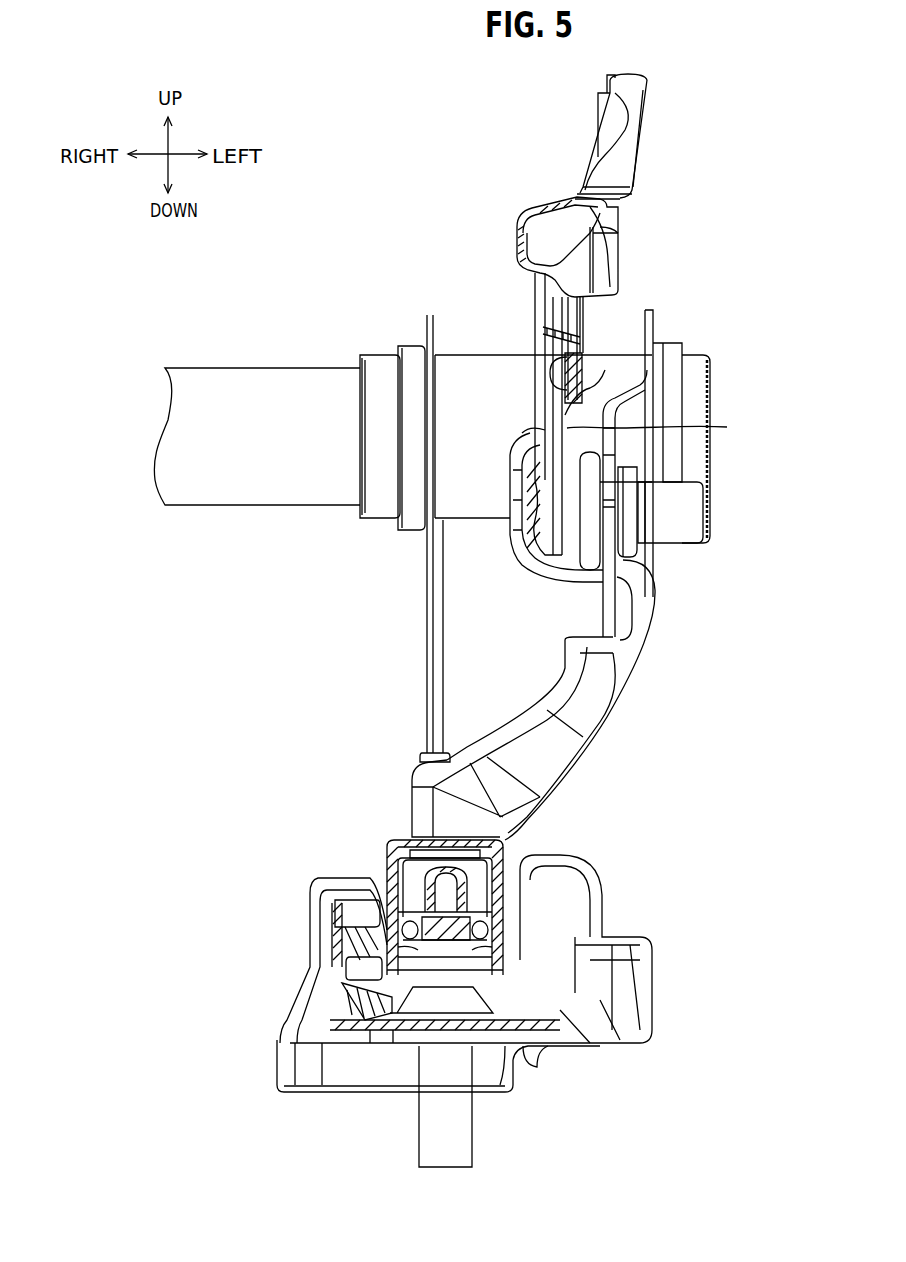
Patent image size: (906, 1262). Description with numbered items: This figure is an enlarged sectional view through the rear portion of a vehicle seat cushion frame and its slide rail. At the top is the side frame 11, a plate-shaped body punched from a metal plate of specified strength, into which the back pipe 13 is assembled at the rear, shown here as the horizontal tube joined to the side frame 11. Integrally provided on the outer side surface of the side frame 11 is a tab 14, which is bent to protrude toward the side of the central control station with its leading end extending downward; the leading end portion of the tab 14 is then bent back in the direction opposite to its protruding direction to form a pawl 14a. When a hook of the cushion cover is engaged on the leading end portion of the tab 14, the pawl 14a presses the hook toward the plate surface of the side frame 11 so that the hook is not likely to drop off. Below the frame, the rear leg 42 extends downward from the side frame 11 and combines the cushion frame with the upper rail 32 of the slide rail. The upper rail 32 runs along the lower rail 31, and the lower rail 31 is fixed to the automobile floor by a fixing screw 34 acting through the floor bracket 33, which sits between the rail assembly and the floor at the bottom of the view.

The side frame 11 is at (515, 232).
The back pipe 13 is at (262, 368).
The tab 14 is at (590, 365).
The pawl 14a is at (701, 477).
The rear leg 42 is at (640, 658).
The upper rail 32 is at (505, 853).
The floor bracket 33 is at (300, 1017).
The lower rail 31 is at (340, 1043).
The fixing screw 34 is at (475, 1133).